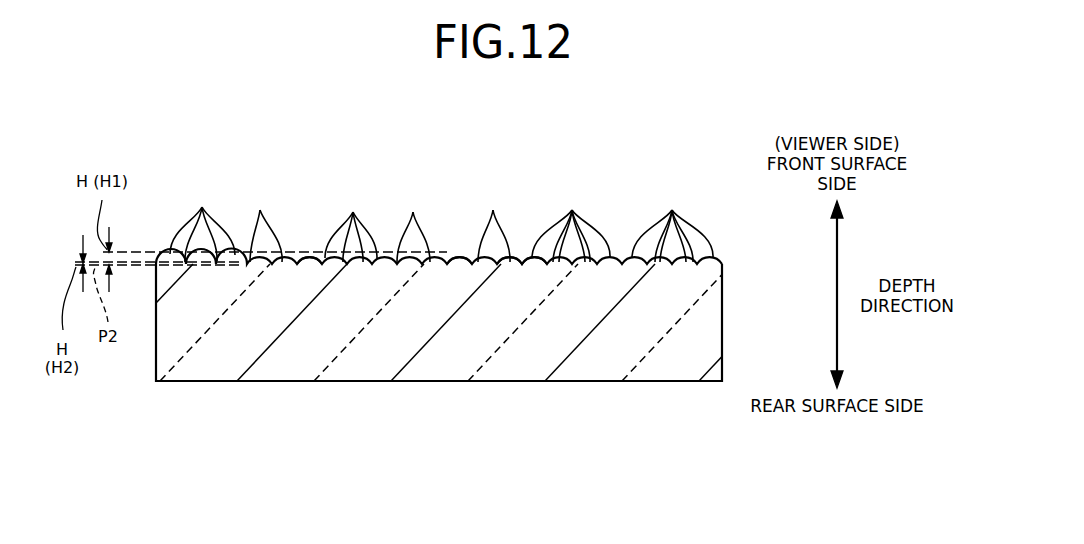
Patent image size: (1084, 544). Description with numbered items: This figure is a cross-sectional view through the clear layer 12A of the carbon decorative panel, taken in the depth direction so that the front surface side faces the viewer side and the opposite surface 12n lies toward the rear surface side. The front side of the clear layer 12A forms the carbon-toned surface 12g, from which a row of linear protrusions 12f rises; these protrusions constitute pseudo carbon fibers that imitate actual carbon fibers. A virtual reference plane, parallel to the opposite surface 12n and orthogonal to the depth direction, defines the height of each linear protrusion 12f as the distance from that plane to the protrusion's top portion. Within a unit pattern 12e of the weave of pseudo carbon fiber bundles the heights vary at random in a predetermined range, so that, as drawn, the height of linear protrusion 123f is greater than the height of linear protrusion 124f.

The linear protrusion 12f is at (455, 264).
The unit pattern 12e is at (602, 167).
The carbon-toned surface 12g is at (528, 227).
The clear layer 12A is at (722, 292).
The opposite surface 12n is at (427, 381).
The linear protrusion 124f is at (305, 203).
The linear protrusion 123f is at (453, 203).